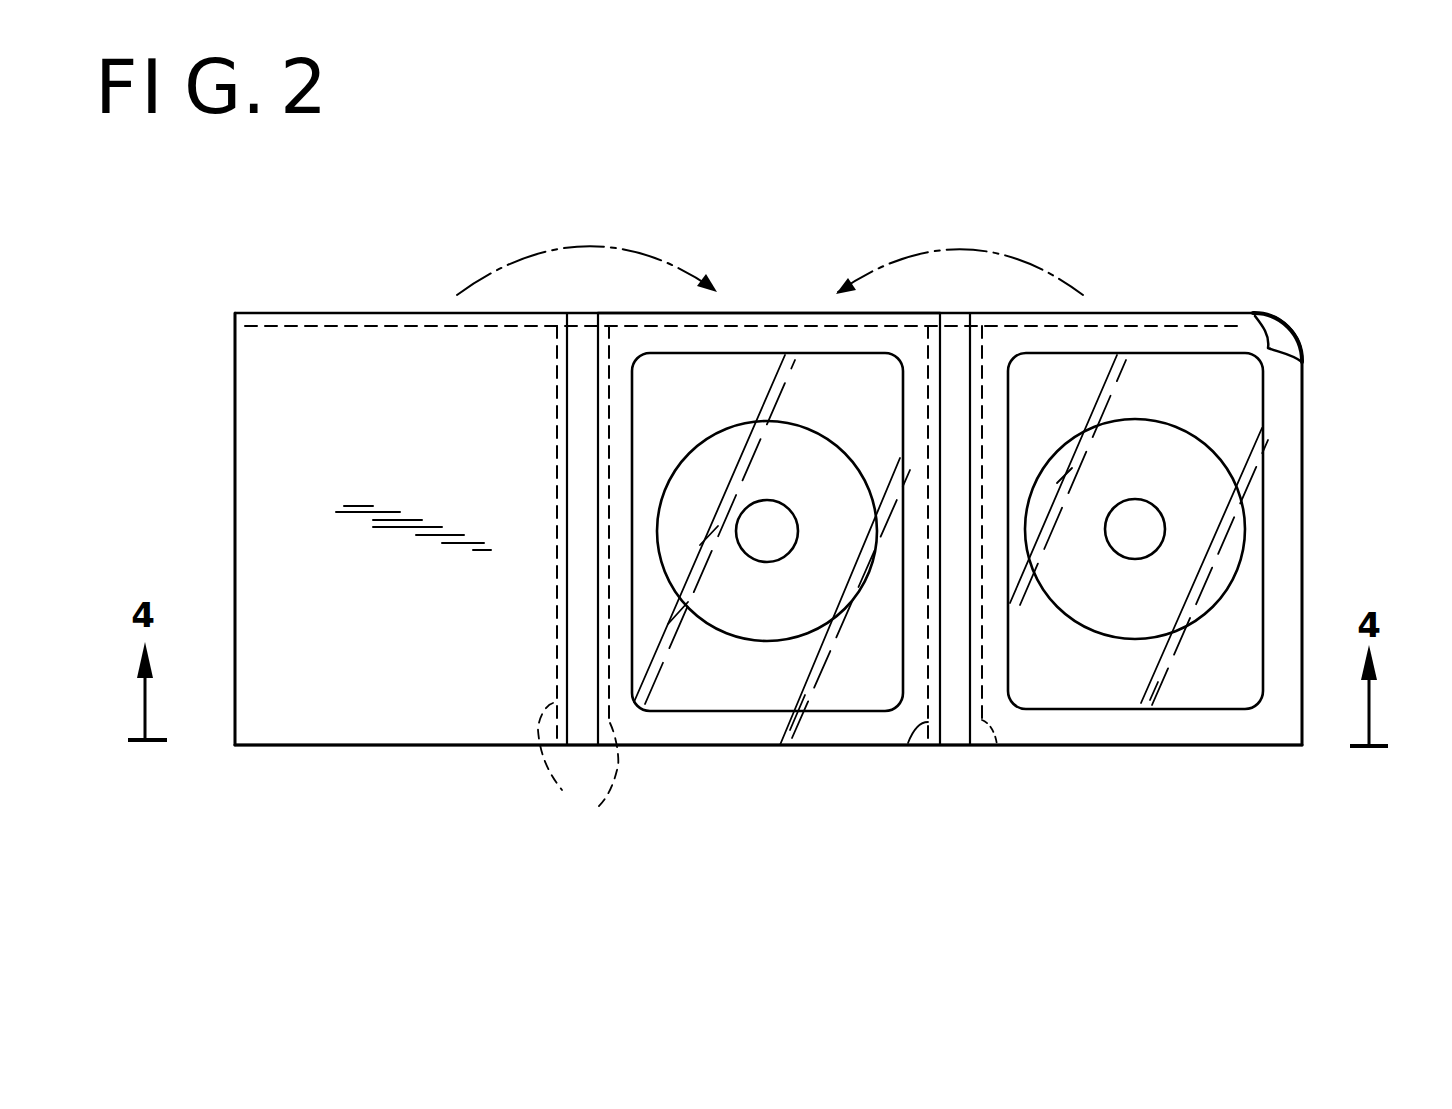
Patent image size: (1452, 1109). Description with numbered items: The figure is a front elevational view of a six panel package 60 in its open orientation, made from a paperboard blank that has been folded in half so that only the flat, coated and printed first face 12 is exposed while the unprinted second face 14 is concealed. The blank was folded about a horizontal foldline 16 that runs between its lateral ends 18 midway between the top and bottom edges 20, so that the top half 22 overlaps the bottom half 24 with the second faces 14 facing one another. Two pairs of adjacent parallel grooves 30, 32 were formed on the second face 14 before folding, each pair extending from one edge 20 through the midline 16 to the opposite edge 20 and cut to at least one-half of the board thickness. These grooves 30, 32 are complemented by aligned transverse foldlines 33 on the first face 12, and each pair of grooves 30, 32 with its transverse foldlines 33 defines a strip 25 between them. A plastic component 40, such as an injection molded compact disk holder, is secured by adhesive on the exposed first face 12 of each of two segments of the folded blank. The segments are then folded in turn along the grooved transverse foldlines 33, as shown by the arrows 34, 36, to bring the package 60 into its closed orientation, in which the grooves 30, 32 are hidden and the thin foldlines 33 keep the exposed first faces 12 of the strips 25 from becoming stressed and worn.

The first face 12 is at (265, 362).
The second face 14 is at (362, 372).
The horizontal foldline 16 is at (780, 312).
The lateral ends 18 is at (235, 575).
The top and bottom edges 20 is at (715, 746).
The top half 22 is at (270, 403).
The bottom half 24 is at (272, 455).
The strip 25 is at (590, 424).
The grooves 30 is at (578, 578).
The grooves 32 is at (905, 760).
The transverse foldlines 33 is at (565, 640).
The arrow 34 is at (988, 250).
The arrow 36 is at (690, 272).
The plastic component 40 is at (768, 675).
The package 60 is at (615, 222).